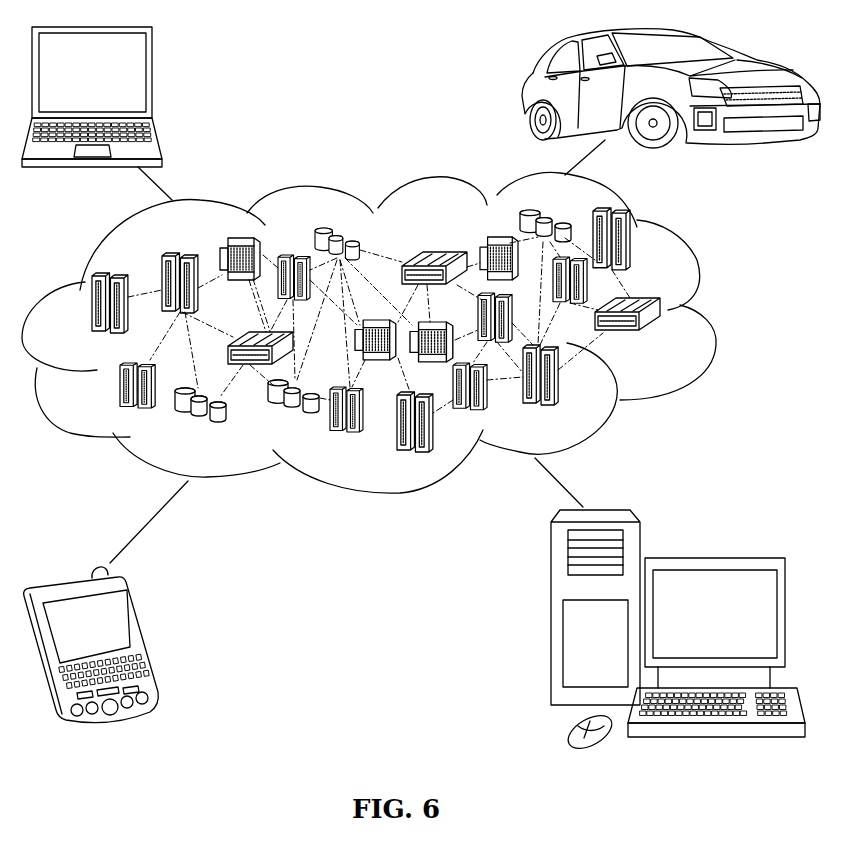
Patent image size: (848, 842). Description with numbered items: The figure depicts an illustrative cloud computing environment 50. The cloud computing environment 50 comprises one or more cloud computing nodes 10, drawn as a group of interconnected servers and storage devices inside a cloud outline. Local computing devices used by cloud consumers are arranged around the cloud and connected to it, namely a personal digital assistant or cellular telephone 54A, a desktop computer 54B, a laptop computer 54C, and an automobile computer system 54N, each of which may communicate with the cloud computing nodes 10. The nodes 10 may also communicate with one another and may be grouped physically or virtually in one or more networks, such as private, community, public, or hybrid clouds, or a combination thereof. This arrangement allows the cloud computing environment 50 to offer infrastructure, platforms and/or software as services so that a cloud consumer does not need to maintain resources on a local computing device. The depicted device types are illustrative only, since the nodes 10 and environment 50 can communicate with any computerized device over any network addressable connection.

The cloud computing node 10 is at (672, 345).
The cloud computing environment 50 is at (712, 310).
The personal digital assistant or cellular telephone 54A is at (140, 639).
The desktop computer 54B is at (713, 557).
The laptop computer 54C is at (152, 79).
The automobile computer system 54N is at (524, 93).